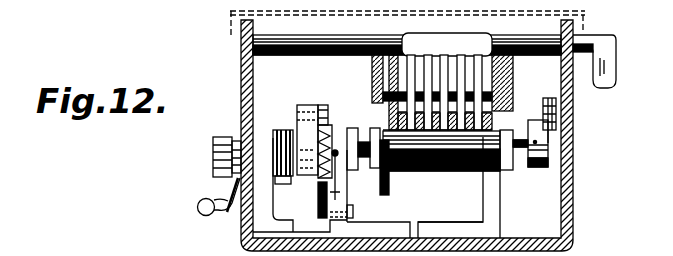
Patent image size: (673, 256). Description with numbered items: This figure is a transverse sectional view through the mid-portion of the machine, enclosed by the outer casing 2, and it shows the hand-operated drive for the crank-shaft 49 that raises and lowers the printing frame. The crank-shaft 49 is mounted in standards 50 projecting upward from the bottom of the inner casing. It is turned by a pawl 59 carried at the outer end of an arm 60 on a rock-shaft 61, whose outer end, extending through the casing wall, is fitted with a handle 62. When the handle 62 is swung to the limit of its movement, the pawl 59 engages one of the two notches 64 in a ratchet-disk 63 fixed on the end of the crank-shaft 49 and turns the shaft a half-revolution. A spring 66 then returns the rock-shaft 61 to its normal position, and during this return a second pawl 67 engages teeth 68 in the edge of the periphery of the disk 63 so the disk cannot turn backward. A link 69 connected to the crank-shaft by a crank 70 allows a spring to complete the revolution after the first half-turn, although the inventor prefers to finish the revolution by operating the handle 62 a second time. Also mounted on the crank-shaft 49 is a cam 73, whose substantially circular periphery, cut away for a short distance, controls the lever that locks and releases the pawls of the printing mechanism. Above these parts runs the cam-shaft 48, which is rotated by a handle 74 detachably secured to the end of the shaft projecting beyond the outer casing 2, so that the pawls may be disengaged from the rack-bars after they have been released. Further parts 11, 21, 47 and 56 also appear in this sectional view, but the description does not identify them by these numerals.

The outer casing 2 is at (567, 190).
The block 11 is at (372, 66).
The member 21 is at (496, 125).
The hatched block 47 is at (513, 70).
The cam-shaft 48 is at (407, 56).
The crank-shaft 49 is at (441, 162).
The standards 50 is at (450, 209).
The stop 56 is at (349, 206).
The pawl 59 is at (320, 107).
The arm 60 is at (300, 108).
The rock-shaft 61 is at (211, 157).
The handle 62 is at (185, 221).
The ratchet-disk 63 is at (320, 192).
The notches 64 is at (283, 131).
The spring 66 is at (283, 180).
The pawl 67 is at (318, 214).
The teeth 68 is at (331, 130).
The link 69 is at (549, 100).
The crank 70 is at (542, 118).
The cam 73 is at (388, 194).
The handle 74 is at (616, 58).